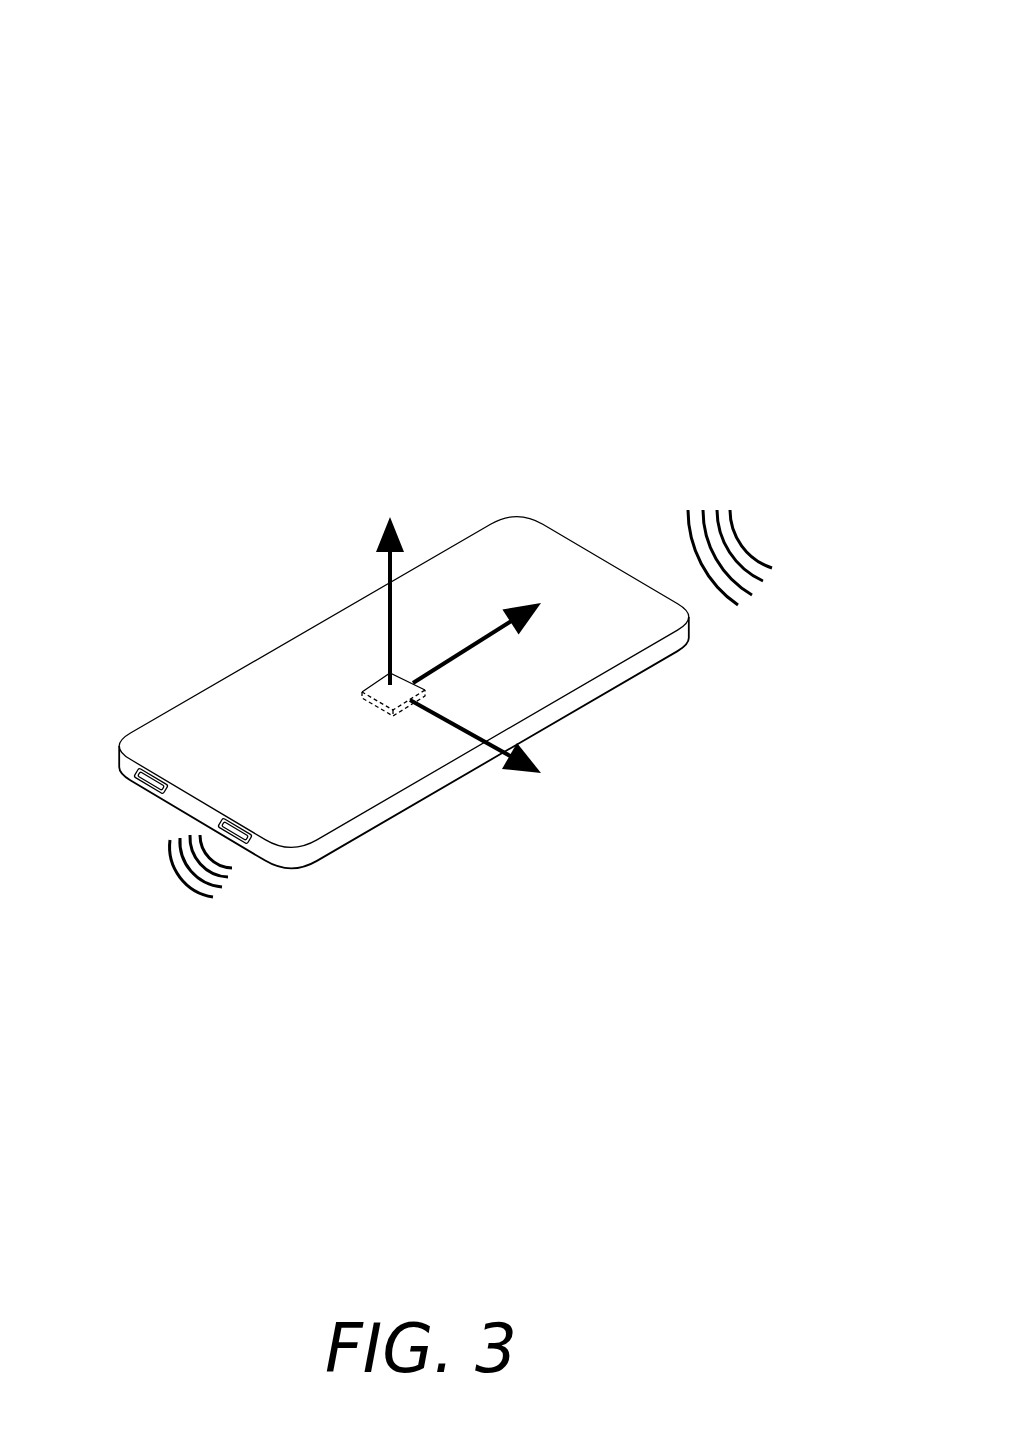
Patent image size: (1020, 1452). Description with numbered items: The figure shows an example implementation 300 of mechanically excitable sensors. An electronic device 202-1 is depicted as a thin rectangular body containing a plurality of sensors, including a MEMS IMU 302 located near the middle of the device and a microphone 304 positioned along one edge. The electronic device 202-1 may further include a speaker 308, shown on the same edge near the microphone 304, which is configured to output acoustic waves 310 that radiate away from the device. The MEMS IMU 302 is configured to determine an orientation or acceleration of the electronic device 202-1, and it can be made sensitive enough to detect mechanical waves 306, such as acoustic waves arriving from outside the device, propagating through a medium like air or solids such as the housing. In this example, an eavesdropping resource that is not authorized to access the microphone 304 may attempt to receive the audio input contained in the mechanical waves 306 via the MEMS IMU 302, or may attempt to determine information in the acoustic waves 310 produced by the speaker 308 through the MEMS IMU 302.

The electronic device environment 300 is at (746, 36).
The electronic device 202-1 is at (517, 516).
The MEMS IMU 302 is at (373, 682).
The microphone 304 is at (147, 785).
The mechanical waves 306 is at (716, 486).
The speaker 308 is at (244, 845).
The acoustic waves 310 is at (208, 925).